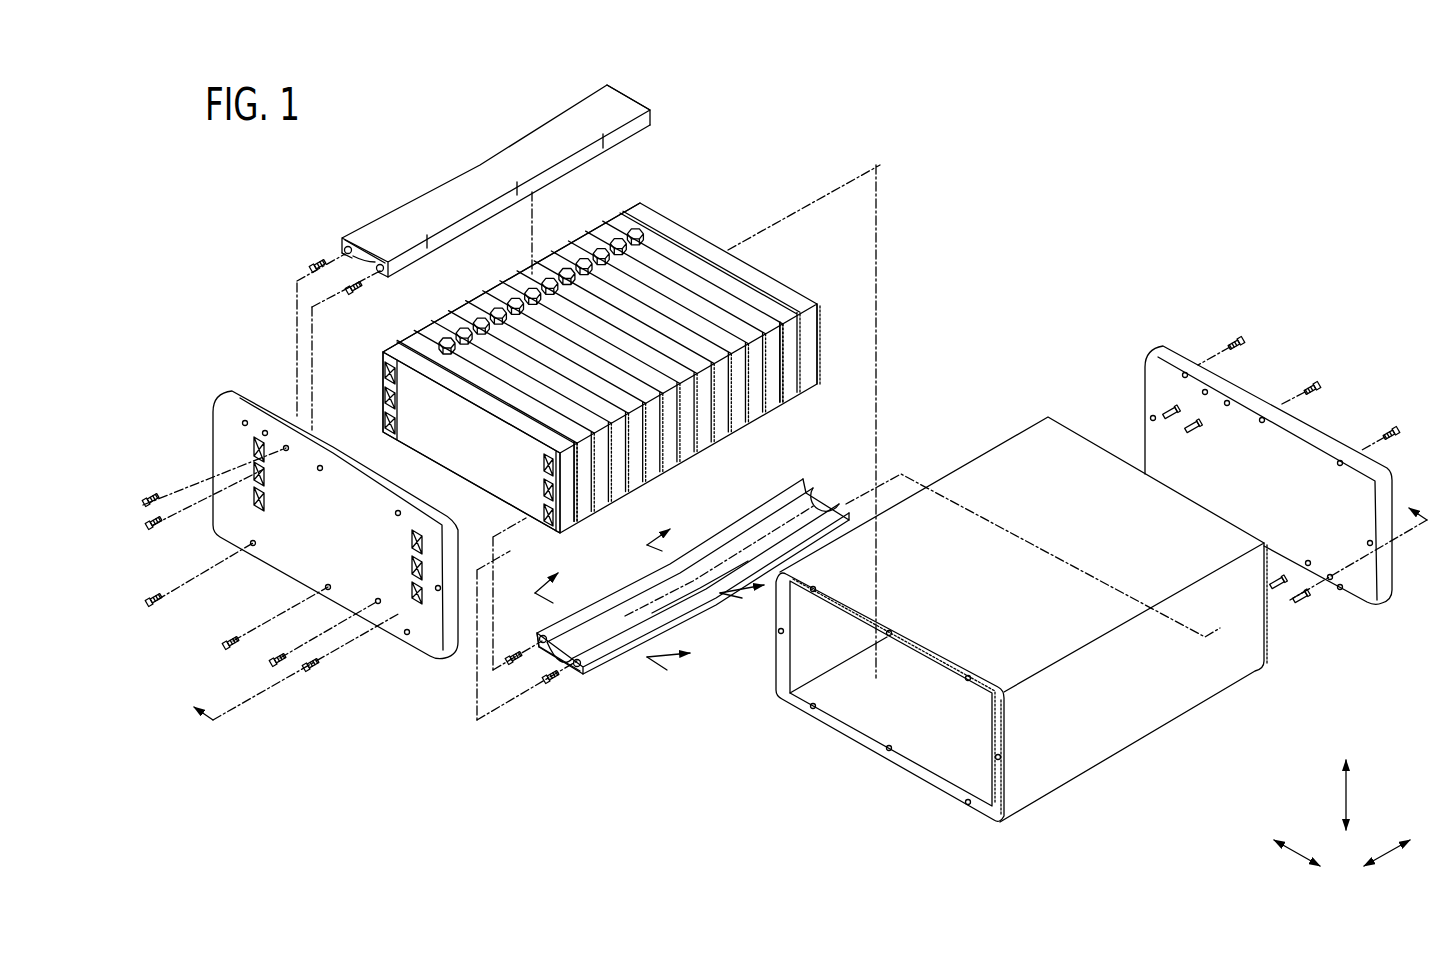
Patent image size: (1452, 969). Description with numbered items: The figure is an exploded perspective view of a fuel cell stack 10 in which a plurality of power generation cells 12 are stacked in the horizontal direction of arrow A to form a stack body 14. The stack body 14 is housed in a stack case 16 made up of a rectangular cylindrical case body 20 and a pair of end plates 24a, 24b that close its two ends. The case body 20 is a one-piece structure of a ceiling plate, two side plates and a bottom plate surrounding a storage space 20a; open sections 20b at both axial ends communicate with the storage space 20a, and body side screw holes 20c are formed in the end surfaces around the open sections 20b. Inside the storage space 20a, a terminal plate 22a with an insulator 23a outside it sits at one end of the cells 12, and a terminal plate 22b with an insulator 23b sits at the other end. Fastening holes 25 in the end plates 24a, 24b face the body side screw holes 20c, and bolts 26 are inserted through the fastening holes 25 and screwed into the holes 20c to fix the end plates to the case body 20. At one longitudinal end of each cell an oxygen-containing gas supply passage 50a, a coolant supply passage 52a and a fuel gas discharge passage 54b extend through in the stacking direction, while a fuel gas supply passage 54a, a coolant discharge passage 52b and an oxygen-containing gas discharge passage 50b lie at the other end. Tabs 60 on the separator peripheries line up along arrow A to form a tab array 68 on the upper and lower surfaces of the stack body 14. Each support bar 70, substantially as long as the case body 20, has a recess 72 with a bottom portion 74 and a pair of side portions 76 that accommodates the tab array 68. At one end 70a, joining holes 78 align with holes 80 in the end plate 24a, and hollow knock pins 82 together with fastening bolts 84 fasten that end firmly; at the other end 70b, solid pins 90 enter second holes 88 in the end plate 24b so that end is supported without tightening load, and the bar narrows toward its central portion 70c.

The fuel cell stack 10 is at (1016, 167).
The power generation cell 12 is at (597, 228).
The stack body 14 is at (703, 219).
The stack case 16 is at (983, 595).
The case body 20 is at (1011, 426).
The storage space 20a is at (1135, 704).
The open section 20b is at (938, 767).
The body side screw hole 20c is at (813, 706).
The terminal plate 22a is at (590, 504).
The terminal plate 22b is at (794, 393).
The insulator 23a is at (567, 523).
The insulator 23b is at (814, 386).
The end plate 24a is at (290, 548).
The end plate 24b is at (1348, 604).
The fastening hole 25 is at (320, 470).
The bolt 26 is at (153, 603).
The oxygen-containing gas supply passage 50a is at (383, 368).
The oxygen-containing gas discharge passage 50b is at (543, 512).
The coolant supply passage 52a is at (383, 393).
The coolant discharge passage 52b is at (543, 487).
The fuel gas supply passage 54a is at (543, 462).
The fuel gas discharge passage 54b is at (383, 420).
The tab 60 is at (497, 312).
The tab array 68 is at (643, 212).
The support bar 70 is at (436, 160).
The one end of the support bar 70a is at (411, 257).
The other end of the support bar 70b is at (588, 98).
The central portion of the support bar 70c is at (481, 163).
The recess 72 is at (370, 273).
The bottom portion 74 is at (378, 243).
The side portion 76 is at (344, 251).
The joining hole 78 is at (347, 238).
The hole 80 is at (287, 447).
The hollow knock pin 82 is at (348, 288).
The fastening bolt 84 is at (153, 525).
The second hole 88 is at (1228, 408).
The solid pin 90 is at (1190, 432).